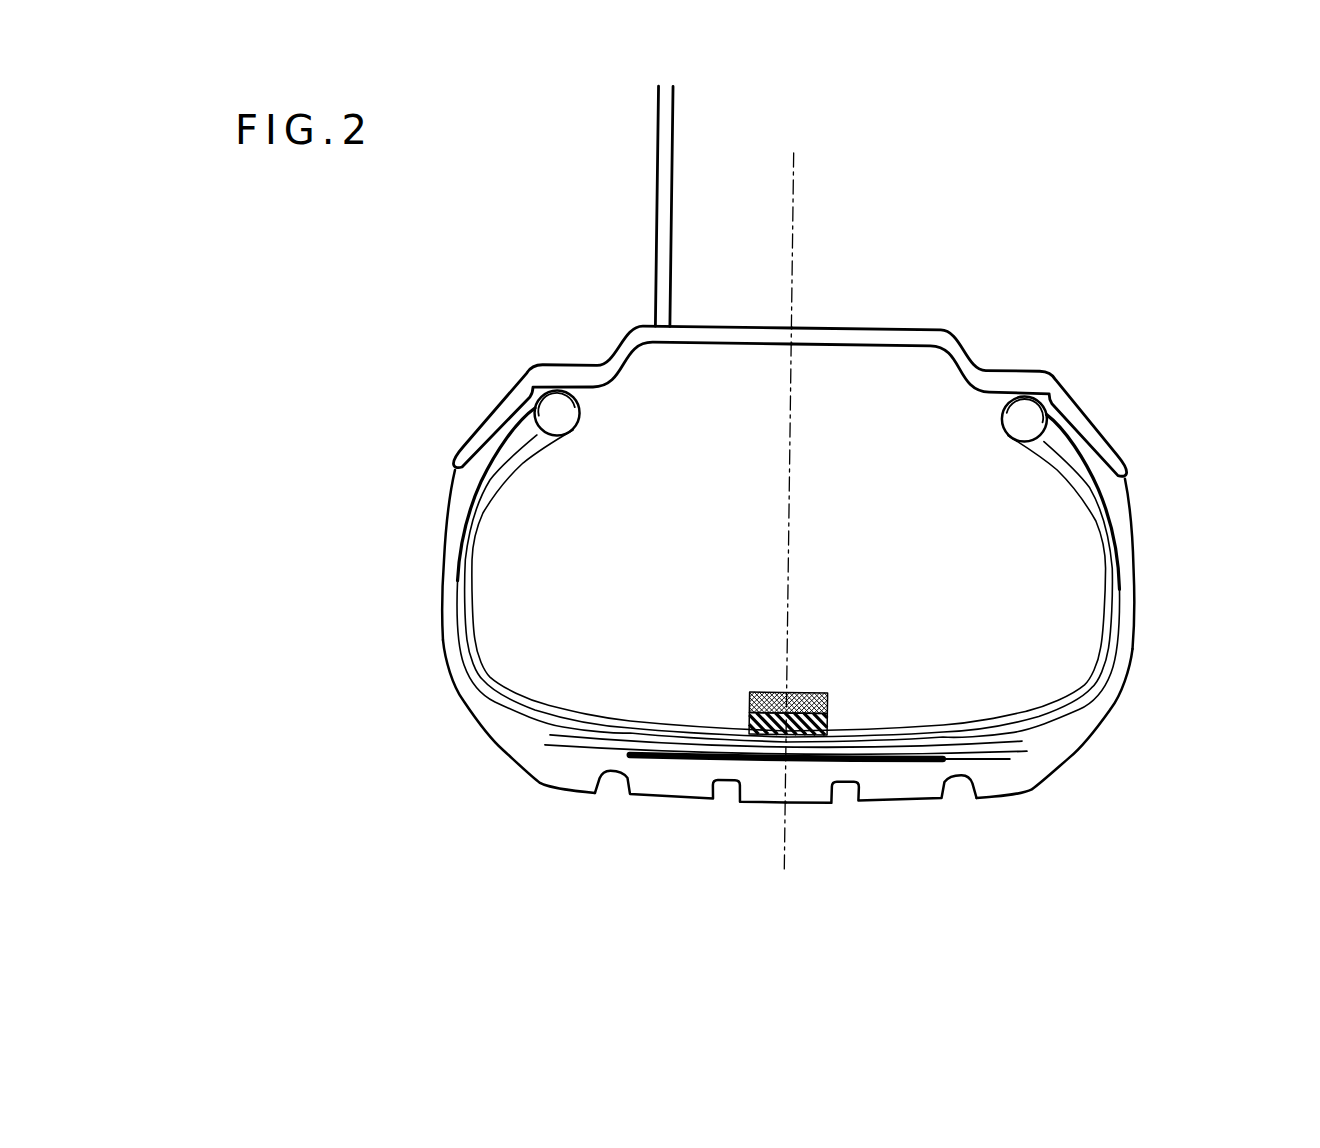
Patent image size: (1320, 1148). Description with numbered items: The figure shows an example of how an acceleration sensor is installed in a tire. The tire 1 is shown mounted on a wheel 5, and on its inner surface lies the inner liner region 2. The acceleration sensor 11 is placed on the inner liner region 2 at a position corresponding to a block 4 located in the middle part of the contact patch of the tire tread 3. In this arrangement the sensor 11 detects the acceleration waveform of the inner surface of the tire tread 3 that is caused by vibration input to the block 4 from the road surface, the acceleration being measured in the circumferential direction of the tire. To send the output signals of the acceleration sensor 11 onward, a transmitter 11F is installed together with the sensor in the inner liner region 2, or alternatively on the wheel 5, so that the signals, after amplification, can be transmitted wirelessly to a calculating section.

The tire 1 is at (1149, 512).
The inner liner region 2 is at (700, 733).
The tire tread 3 is at (535, 763).
The block 4 is at (810, 783).
The wheel 5 is at (595, 355).
The acceleration sensor 11 is at (827, 713).
The transmitter 11F is at (813, 692).